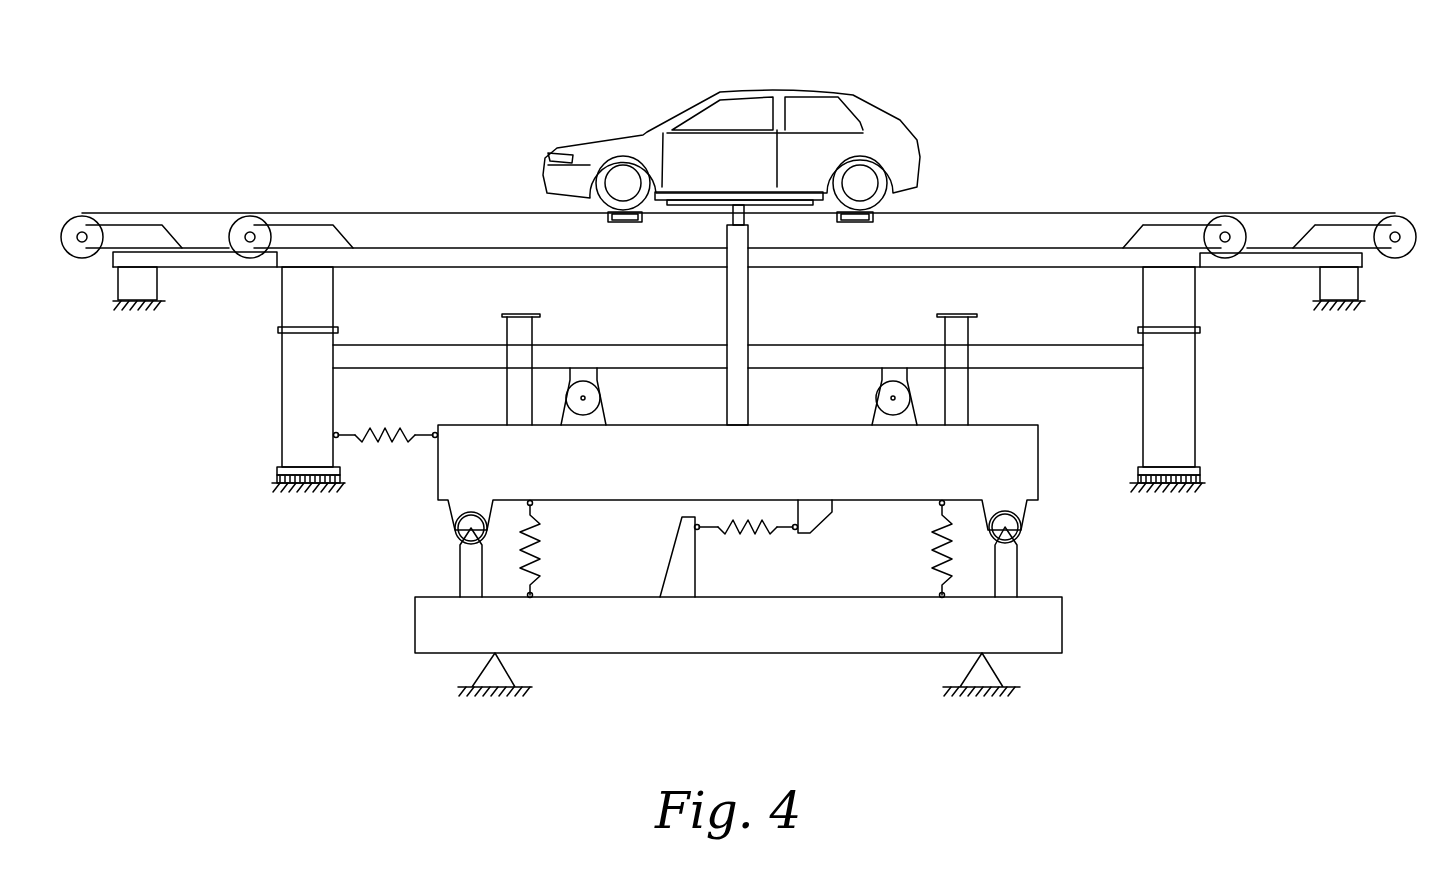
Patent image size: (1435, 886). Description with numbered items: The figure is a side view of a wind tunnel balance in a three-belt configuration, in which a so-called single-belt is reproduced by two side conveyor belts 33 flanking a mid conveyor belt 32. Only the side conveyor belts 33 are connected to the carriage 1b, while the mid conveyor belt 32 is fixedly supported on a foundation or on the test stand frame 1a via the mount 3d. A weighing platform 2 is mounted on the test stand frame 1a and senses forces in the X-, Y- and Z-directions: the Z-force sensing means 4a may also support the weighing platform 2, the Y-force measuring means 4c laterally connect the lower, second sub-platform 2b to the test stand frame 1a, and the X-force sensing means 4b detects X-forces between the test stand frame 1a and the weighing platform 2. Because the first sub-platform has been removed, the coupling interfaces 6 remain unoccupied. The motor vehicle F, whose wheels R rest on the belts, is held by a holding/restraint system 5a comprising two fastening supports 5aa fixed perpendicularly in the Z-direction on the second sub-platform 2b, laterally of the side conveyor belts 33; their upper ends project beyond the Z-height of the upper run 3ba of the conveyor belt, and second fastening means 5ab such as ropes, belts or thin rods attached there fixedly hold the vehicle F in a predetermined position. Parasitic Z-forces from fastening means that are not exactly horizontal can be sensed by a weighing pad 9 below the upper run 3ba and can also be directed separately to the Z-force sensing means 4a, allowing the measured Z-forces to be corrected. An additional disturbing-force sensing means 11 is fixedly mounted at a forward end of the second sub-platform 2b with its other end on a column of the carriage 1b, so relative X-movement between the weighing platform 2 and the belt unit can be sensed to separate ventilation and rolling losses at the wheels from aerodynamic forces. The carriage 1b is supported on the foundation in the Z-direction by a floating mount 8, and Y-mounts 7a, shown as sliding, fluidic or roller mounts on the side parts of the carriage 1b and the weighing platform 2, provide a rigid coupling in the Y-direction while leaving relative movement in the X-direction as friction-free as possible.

The test stand frame 1a is at (830, 633).
The carriage 1b is at (295, 385).
The weighing platform 2 is at (809, 492).
The second sub-platform 2b is at (1028, 458).
The upper run 3ba is at (738, 313).
The mount 3d is at (128, 285).
The Z-force sensing means 4a is at (540, 530).
The X-force sensing means 4b is at (752, 535).
The Y-force measuring means 4c is at (455, 530).
The holding/restraint system 5a is at (754, 223).
The fastening supports 5aa is at (740, 293).
The second fastening means 5ab is at (727, 193).
The coupling interfaces 6 is at (500, 313).
The Y-mount 7a is at (565, 402).
The floating mount 8 is at (277, 479).
The weighing pad 9 is at (608, 222).
The disturbing-force sensing means 11 is at (392, 440).
The mid conveyor belt 32 is at (738, 300).
The side conveyor belts 33 is at (1273, 255).
The motor vehicle F is at (883, 122).
The wheel R is at (622, 178).